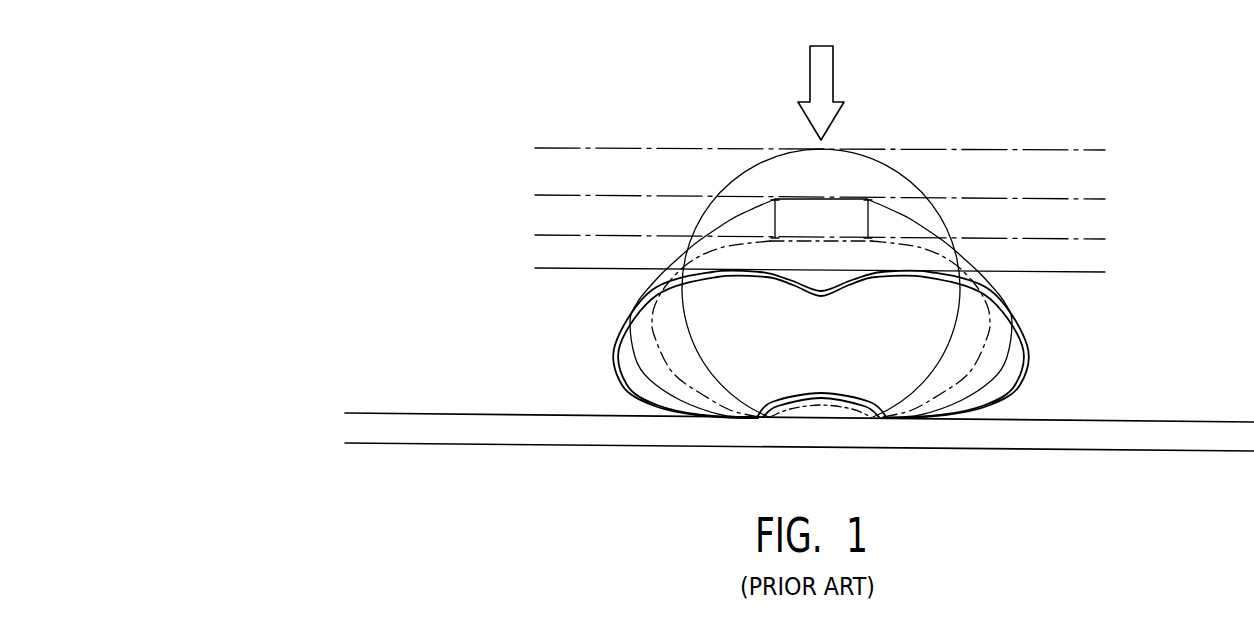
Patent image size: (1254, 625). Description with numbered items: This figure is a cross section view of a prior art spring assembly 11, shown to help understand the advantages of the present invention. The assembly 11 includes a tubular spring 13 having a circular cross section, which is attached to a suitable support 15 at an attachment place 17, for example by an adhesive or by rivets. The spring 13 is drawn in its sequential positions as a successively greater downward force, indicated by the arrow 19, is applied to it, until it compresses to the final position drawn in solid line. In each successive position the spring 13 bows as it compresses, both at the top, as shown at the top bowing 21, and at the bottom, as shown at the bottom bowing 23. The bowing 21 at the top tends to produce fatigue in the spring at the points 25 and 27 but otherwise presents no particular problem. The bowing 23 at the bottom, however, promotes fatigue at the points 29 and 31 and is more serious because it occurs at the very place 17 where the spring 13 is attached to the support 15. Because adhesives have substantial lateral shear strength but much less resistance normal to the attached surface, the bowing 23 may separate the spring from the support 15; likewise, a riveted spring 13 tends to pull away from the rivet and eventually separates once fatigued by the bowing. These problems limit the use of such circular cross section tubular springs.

The spring assembly 11 is at (518, 293).
The tubular spring 13 is at (792, 317).
The support 15 is at (498, 428).
The attachment place 17 is at (821, 433).
The arrow 19 is at (825, 82).
The top bowing 21 is at (827, 230).
The bottom bowing 23 is at (822, 379).
The fatigue point 25 is at (775, 222).
The fatigue point 27 is at (868, 222).
The fatigue point 29 is at (753, 420).
The fatigue point 31 is at (880, 421).